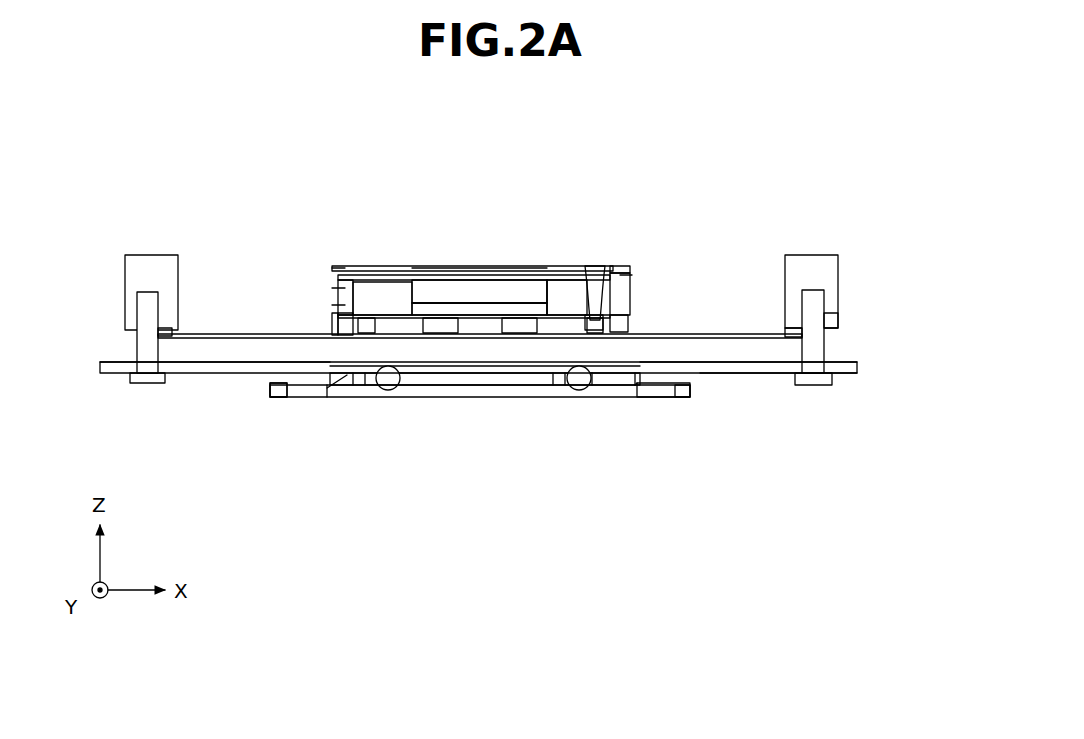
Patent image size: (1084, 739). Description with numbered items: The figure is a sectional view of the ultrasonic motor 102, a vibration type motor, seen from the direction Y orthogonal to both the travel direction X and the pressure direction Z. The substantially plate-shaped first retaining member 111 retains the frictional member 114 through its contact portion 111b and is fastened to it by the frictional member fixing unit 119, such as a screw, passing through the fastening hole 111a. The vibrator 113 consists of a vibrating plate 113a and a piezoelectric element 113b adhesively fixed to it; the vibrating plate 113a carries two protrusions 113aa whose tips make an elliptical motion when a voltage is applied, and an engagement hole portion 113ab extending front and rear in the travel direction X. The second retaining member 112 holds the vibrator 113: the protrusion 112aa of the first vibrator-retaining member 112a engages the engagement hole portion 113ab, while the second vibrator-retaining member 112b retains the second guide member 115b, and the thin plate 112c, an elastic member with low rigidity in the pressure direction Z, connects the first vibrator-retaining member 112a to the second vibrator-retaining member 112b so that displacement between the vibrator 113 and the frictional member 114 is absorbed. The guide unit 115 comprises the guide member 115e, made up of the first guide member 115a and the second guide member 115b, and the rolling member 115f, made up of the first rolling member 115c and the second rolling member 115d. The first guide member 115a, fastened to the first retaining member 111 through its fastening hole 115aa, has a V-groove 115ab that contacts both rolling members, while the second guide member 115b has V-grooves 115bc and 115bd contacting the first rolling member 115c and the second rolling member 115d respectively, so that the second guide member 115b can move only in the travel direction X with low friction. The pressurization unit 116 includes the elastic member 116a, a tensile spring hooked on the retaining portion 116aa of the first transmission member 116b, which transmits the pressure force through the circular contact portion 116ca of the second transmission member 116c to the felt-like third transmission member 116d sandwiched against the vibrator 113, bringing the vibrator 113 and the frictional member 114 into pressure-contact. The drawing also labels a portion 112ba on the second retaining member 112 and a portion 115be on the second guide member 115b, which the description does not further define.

The ultrasonic motor 102 is at (153, 90).
The first retaining member 111 is at (823, 268).
The fastening hole 111a is at (830, 318).
The contact portion 111b is at (803, 334).
The frictional member fixing unit 119 is at (815, 300).
The second retaining member 112 is at (857, 118).
The first vibrator-retaining member 112a is at (631, 287).
The protrusion 112aa is at (600, 272).
The second vibrator-retaining member 112b is at (631, 305).
The elastic member end portion 112ba is at (331, 325).
The thin plate 112c is at (631, 272).
The vibrator 113 is at (427, 183).
The vibrating plate 113a is at (443, 267).
The protrusions 113aa is at (516, 316).
The engagement hole portion 113ab is at (582, 278).
The piezoelectric element 113b is at (342, 268).
The frictional member 114 is at (775, 352).
The guide unit 115 is at (760, 522).
The first guide member 115a is at (758, 367).
The fastening hole 115aa is at (828, 368).
The V-groove 115ab is at (330, 367).
The second guide member 115b is at (655, 397).
The V-groove 115bc is at (338, 397).
The V-groove 115bd is at (612, 376).
The rail base end 115be is at (280, 397).
The first rolling member 115c is at (388, 380).
The second rolling member 115d is at (579, 380).
The guide member 115e is at (775, 478).
The rolling member 115f is at (580, 478).
The pressurization unit 116 is at (108, 110).
The elastic member 116a is at (332, 305).
The retaining portion 116aa is at (626, 275).
The first transmission member 116b is at (332, 268).
The second transmission member 116c is at (332, 288).
The contact portion 116ca is at (481, 268).
The third transmission member 116d is at (332, 320).